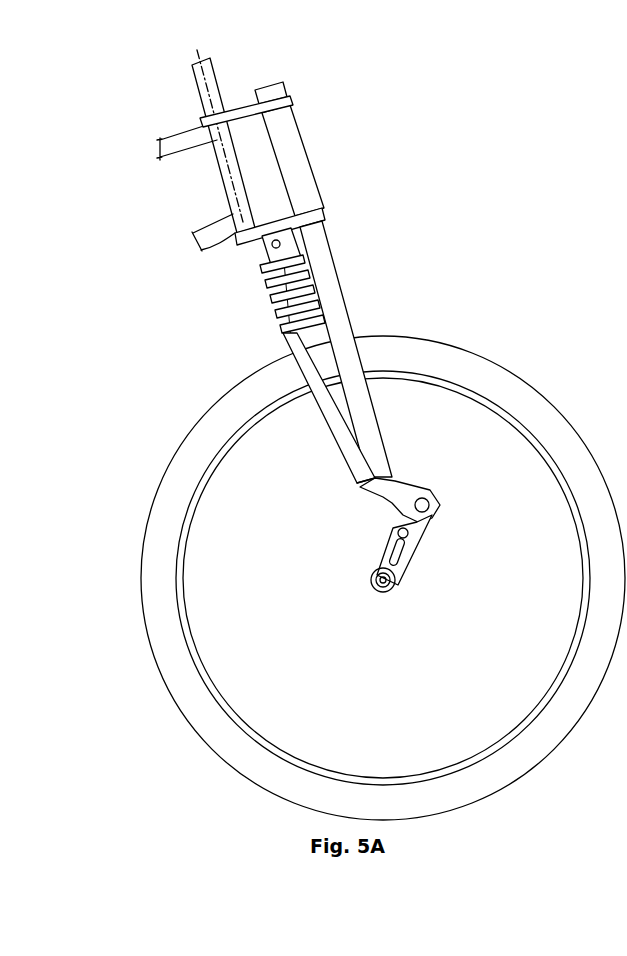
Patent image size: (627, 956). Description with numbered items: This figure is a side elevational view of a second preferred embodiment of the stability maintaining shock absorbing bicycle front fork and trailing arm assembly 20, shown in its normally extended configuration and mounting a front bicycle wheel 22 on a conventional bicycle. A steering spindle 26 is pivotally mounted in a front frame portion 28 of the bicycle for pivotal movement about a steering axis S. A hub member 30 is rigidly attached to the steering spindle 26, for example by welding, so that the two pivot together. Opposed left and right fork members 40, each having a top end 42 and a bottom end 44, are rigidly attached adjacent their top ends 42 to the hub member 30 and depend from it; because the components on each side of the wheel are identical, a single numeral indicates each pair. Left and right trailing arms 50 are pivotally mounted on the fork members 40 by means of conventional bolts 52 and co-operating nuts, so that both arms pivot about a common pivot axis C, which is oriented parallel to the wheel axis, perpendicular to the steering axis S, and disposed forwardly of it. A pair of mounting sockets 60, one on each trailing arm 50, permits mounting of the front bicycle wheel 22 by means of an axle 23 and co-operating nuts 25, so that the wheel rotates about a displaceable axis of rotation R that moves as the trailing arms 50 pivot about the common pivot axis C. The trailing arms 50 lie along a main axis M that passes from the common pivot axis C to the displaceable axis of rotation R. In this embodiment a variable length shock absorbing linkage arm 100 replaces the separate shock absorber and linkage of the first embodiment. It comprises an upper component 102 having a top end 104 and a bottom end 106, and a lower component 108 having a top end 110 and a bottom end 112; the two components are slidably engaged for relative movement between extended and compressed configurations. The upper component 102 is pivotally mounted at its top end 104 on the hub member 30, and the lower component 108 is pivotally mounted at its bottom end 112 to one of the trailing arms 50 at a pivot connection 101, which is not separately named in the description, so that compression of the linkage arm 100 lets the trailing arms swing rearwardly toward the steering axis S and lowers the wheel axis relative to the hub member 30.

The front fork and trailing arm assembly 20 is at (474, 218).
The front bicycle wheel 22 is at (565, 418).
The axle 23 is at (378, 578).
The co-operating nuts 25 is at (395, 580).
The steering spindle 26 is at (222, 165).
The front frame portion 28 is at (249, 70).
The hub member 30 is at (238, 247).
The fork members 40 is at (350, 320).
The top end 42 is at (287, 130).
The bottom end 44 is at (403, 483).
The trailing arms 50 is at (375, 585).
The bolts 52 is at (438, 510).
The mounting sockets 60 is at (388, 587).
The variable length shock absorbing linkage arm 100 is at (184, 356).
The pivot pin 101 is at (410, 533).
The upper component 102 is at (300, 253).
The top end 104 is at (283, 243).
The bottom end 106 is at (300, 270).
The lower component 108 is at (282, 312).
The top end 110 is at (278, 293).
The bottom end 112 is at (280, 333).
The steering axis S is at (197, 60).
The main axis M is at (428, 488).
The common pivot axis C is at (430, 503).
The displaceable axis of rotation R is at (385, 594).